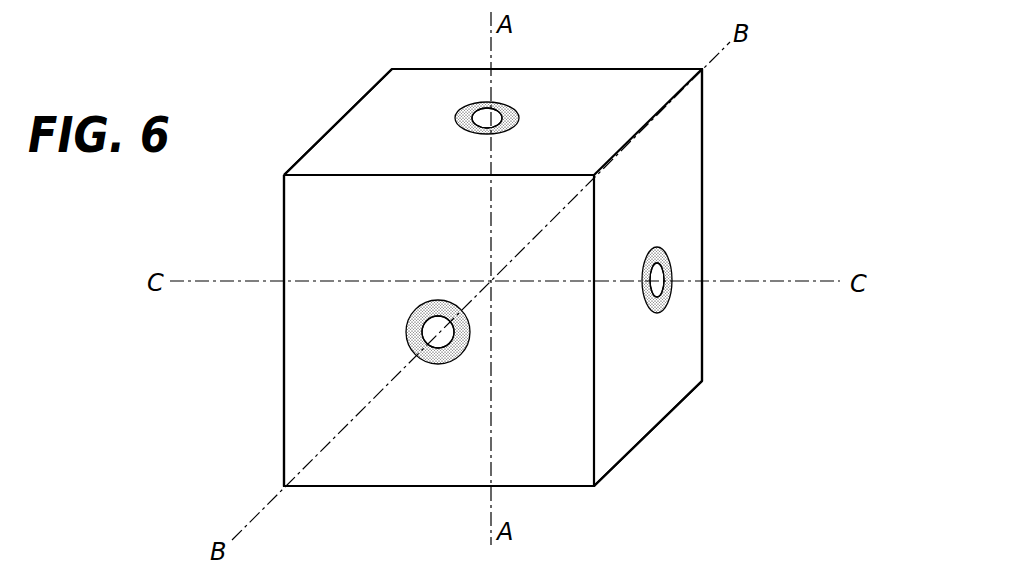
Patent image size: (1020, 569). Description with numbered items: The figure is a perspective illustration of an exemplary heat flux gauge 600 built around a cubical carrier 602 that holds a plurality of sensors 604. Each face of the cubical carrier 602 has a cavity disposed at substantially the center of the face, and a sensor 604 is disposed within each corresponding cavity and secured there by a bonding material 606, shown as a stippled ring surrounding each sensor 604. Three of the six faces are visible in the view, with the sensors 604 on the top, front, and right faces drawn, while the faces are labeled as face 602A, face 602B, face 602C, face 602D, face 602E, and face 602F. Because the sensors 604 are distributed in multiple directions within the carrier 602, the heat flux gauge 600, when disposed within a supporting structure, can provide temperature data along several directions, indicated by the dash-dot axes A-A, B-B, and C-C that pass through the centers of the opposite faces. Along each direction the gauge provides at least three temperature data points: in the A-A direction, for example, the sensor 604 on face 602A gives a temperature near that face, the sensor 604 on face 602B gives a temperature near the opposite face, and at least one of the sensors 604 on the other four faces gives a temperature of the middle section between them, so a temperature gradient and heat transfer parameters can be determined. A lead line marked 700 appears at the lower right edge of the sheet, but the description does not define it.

The heat flux gauge 600 is at (805, 106).
The cubical carrier 602 is at (392, 71).
The face 602A is at (598, 77).
The face 602B is at (565, 487).
The face 602C is at (292, 428).
The face 602D is at (702, 163).
The face 602E is at (687, 335).
The face 602F is at (284, 243).
The sensors 604 is at (483, 117).
The bonding material 606 is at (503, 127).
The element 700 is at (850, 568).